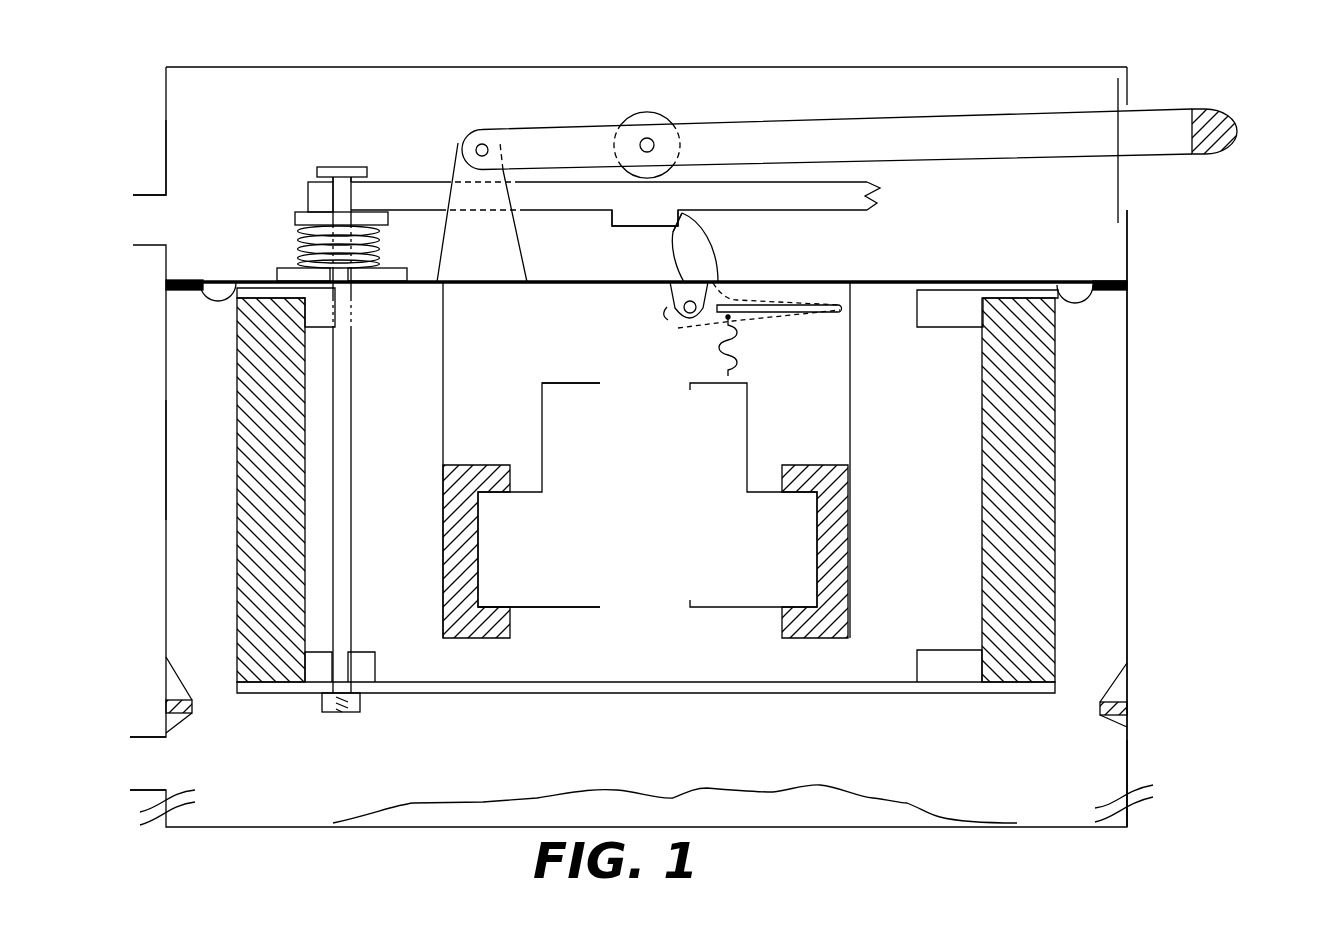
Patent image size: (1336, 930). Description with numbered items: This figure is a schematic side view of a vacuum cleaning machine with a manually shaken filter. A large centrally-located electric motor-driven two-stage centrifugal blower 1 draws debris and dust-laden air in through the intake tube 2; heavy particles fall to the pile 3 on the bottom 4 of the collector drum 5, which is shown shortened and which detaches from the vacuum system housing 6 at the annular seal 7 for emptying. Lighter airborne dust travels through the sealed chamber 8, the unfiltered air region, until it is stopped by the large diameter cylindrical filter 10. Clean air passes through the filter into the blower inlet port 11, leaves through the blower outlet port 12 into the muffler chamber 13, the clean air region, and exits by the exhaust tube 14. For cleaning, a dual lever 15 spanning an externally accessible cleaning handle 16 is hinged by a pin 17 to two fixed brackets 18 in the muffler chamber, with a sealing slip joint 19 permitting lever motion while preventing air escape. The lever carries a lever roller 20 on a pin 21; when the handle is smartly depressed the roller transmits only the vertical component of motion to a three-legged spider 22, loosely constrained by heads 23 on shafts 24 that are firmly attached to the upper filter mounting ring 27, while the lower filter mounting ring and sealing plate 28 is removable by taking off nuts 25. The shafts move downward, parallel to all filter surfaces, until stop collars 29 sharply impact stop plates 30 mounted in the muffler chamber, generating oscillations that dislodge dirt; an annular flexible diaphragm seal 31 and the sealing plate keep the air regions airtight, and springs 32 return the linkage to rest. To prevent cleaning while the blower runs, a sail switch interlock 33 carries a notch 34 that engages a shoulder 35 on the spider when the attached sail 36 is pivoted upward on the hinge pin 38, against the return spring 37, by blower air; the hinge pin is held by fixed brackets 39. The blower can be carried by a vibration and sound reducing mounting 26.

The blower 1 is at (540, 437).
The intake tube 2 is at (148, 733).
The pile 3 is at (837, 790).
The bottom 4 is at (255, 823).
The collector drum 5 is at (1127, 762).
The vacuum system housing 6 is at (1127, 548).
The annular seal 7 is at (165, 705).
The sealed chamber 8 is at (202, 472).
The cylindrical filter 10 is at (235, 582).
The blower inlet port 11 is at (600, 597).
The blower outlet port 12 is at (600, 387).
The muffler chamber 13 is at (918, 90).
The exhaust tube 14 is at (147, 193).
The dual lever 15 is at (997, 160).
The cleaning handle 16 is at (1235, 118).
The pin 17 is at (477, 143).
The fixed brackets 18 is at (527, 260).
The sealing slip joint 19 is at (1120, 180).
The lever roller 20 is at (663, 122).
The pin 21 is at (640, 147).
The spider 22 is at (580, 213).
The heads 23 is at (332, 167).
The shafts 24 is at (352, 470).
The nuts 25 is at (348, 712).
The vibration and sound reducing mounting 26 is at (510, 617).
The upper filter mounting ring 27 is at (362, 327).
The lower filter mounting ring and sealing plate 28 is at (363, 652).
The stop collars 29 is at (293, 220).
The stop plates 30 is at (283, 270).
The annular flexible diaphragm seal 31 is at (215, 307).
The springs 32 is at (380, 263).
The sail switch interlock 33 is at (717, 253).
The notch 34 is at (678, 233).
The shoulder 35 is at (660, 225).
The sail 36 is at (768, 313).
The return spring 37 is at (733, 352).
The hinge pin 38 is at (675, 322).
The fixed brackets 39 is at (667, 293).